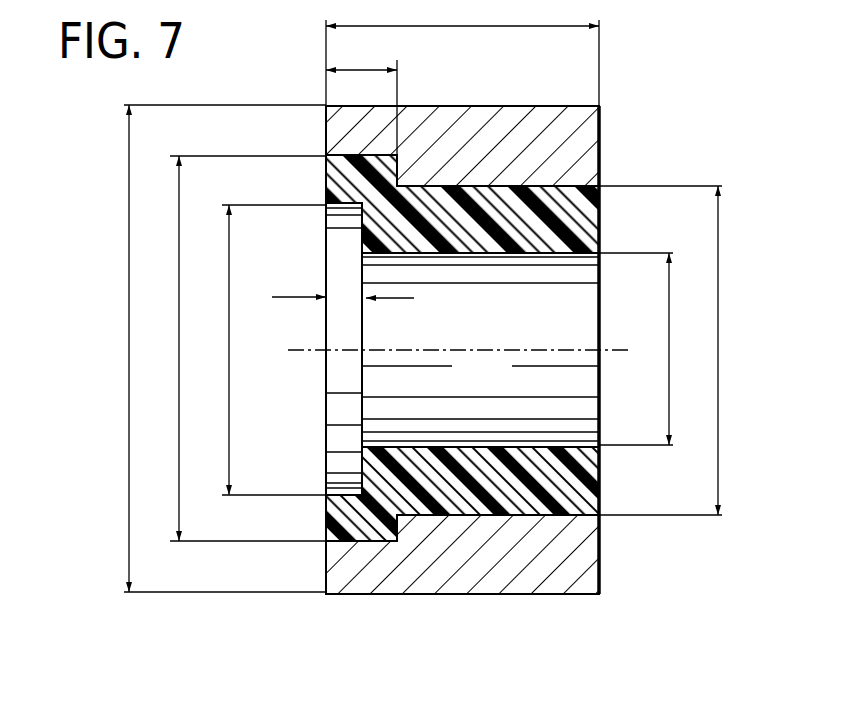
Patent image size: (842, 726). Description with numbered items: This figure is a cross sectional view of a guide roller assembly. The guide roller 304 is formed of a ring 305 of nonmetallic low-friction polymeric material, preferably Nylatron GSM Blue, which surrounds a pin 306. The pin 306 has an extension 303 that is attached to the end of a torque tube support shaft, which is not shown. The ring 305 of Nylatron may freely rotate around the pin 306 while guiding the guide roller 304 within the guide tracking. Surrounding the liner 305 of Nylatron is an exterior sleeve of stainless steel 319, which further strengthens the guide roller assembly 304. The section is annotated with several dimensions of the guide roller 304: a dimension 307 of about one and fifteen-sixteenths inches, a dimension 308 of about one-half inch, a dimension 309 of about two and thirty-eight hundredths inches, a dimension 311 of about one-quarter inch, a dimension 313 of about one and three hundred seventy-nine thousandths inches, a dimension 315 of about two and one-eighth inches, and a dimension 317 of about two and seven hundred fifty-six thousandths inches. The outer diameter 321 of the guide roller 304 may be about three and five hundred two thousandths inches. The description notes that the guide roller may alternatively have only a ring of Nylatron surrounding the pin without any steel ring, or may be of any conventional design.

The extension 303 is at (340, 404).
The guide roller 304 is at (651, 68).
The ring 305 is at (597, 470).
The pin 306 is at (459, 387).
The dimension 307 is at (462, 53).
The dimension 308 is at (361, 96).
The dimension 309 is at (670, 350).
The dimension 311 is at (342, 285).
The dimension 313 is at (645, 349).
The dimension 315 is at (266, 350).
The dimension 317 is at (241, 348).
The exterior sleeve of stainless steel 319 is at (597, 553).
The outer diameter 321 is at (217, 348).